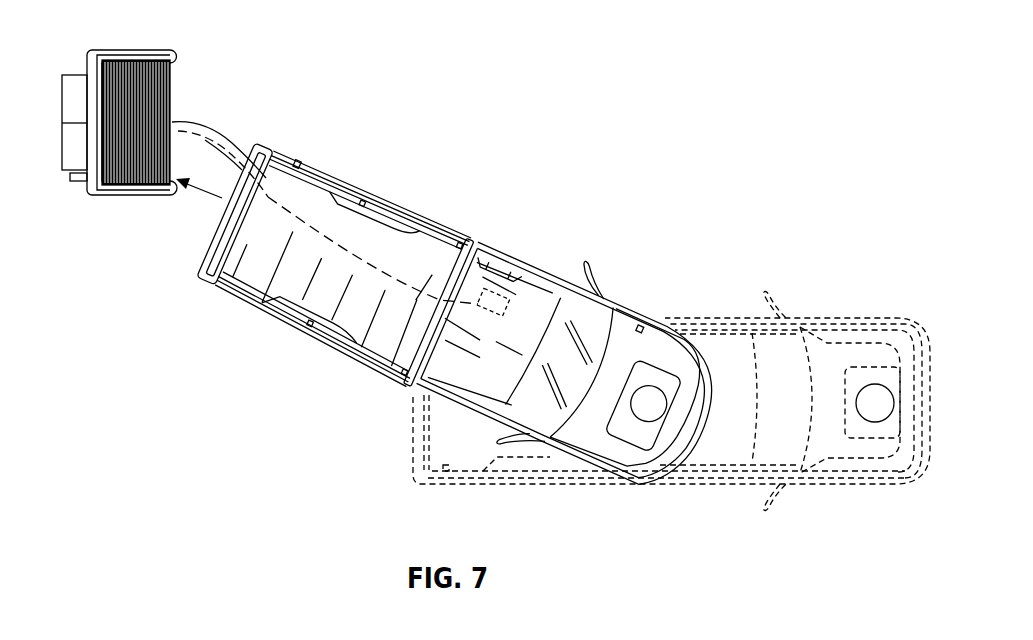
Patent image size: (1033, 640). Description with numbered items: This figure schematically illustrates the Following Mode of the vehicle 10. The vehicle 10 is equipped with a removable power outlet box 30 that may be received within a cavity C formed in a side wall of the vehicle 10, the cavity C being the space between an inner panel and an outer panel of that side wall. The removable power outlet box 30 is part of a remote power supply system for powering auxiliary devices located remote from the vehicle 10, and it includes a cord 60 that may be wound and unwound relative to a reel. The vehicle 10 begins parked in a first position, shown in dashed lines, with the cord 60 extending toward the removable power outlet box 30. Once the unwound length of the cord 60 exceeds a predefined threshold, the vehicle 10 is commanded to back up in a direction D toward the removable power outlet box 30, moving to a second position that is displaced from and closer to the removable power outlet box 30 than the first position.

The vehicle 10 is at (456, 209).
The removable power outlet box 30 is at (107, 43).
The cord 60 is at (212, 130).
The cavity C is at (303, 157).
The direction D is at (203, 195).